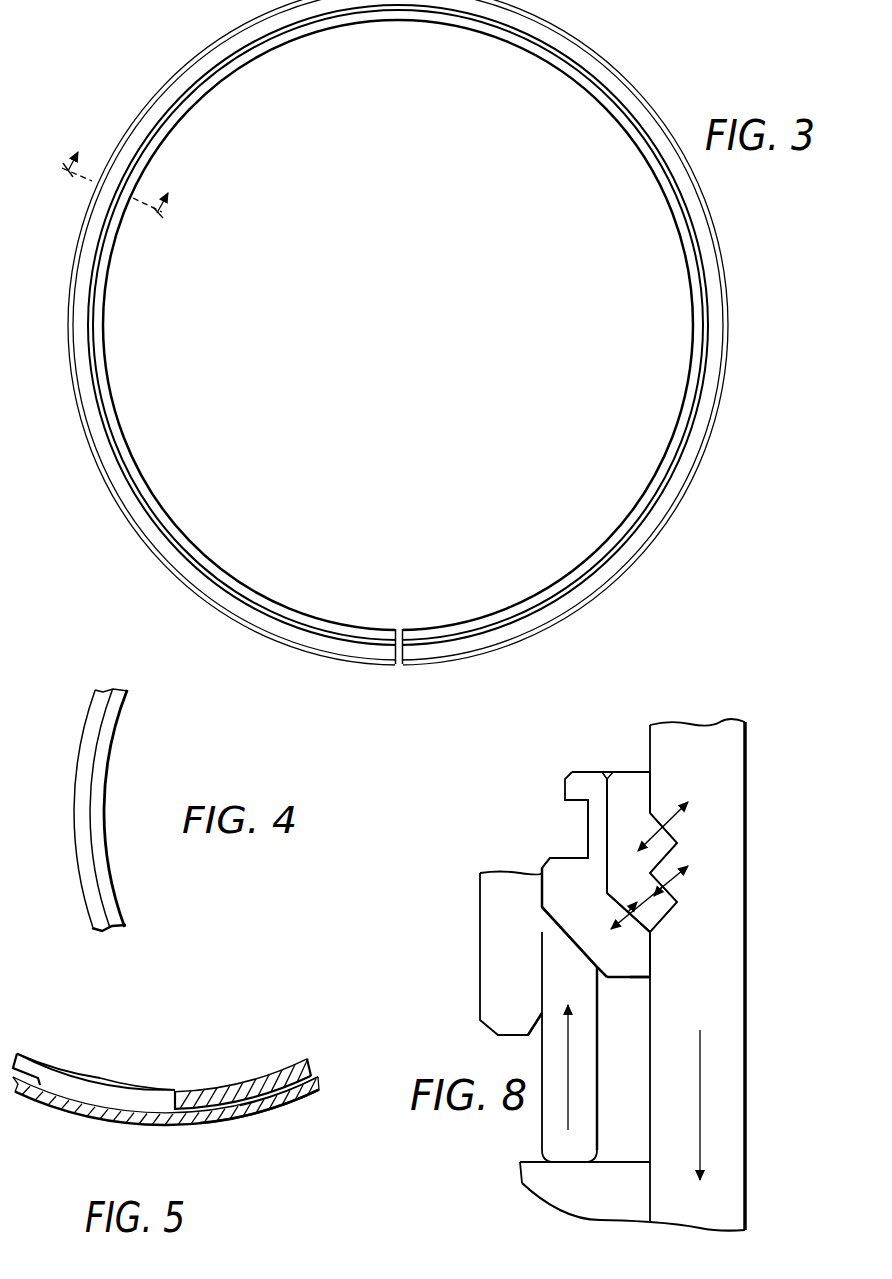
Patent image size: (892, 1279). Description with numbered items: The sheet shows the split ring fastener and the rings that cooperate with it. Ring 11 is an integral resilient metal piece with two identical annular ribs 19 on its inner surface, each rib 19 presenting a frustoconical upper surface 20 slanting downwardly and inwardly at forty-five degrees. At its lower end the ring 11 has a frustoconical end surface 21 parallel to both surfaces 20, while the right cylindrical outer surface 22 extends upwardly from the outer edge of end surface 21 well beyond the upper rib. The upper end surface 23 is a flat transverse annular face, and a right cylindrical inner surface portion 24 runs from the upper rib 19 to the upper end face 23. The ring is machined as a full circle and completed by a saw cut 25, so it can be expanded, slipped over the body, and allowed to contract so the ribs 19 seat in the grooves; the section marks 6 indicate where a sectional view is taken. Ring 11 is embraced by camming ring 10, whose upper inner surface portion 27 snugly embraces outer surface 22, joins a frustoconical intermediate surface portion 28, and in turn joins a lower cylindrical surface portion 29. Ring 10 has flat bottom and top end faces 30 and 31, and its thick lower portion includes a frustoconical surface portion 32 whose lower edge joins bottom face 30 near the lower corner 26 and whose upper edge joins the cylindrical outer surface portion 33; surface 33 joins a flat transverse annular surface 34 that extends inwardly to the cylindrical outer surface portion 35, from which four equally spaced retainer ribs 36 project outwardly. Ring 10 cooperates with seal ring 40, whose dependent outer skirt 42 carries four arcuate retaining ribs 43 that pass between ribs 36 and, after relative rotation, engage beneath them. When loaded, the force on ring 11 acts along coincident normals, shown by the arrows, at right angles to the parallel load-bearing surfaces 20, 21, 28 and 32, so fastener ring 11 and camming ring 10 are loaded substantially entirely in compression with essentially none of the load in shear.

In FIG. 3, the section line 6- 6 is at (121, 172).
In FIG. 5, the camming ring 10 is at (219, 1081).
In FIG. 8, the camming ring 10 is at (561, 855).
In FIG. 3, the ring 11 is at (398, 358).
In FIG. 4, the ring 11 is at (102, 810).
In FIG. 8, the ring 11 is at (647, 859).
In FIG. 3, the annular ribs 19 is at (142, 471).
In FIG. 4, the annular ribs 19 is at (115, 748).
In FIG. 8, the annular ribs 19 is at (673, 849).
In FIG. 3, the frustoconical upper surface 20 is at (165, 517).
In FIG. 8, the frustoconical upper surface 20 is at (671, 833).
In FIG. 4, the frustoconical end surface 21 is at (80, 788).
In FIG. 8, the frustoconical end surface 21 is at (638, 936).
In FIG. 3, the outer surface 22 is at (190, 588).
In FIG. 4, the outer surface 22 is at (78, 852).
In FIG. 8, the outer surface 22 is at (607, 873).
In FIG. 3, the upper end surface 23 is at (150, 533).
In FIG. 8, the upper end surface 23 is at (633, 772).
In FIG. 3, the inner surface portion 24 is at (198, 570).
In FIG. 8, the inner surface portion 24 is at (650, 790).
In FIG. 3, the saw cut 25 is at (399, 667).
In FIG. 8, the bottom corner 26 is at (634, 968).
In FIG. 5, the upper right cylindrical inner surface portion 27 is at (53, 1070).
In FIG. 8, the upper right cylindrical inner surface portion 27 is at (607, 832).
In FIG. 8, the frustoconical intermediate surface portion 28 is at (625, 888).
In FIG. 8, the lower right cylindrical surface portion 29 is at (652, 965).
In FIG. 8, the bottom end face 30 is at (623, 978).
In FIG. 5, the top end face 31 is at (72, 1090).
In FIG. 8, the top end face 31 is at (590, 772).
In FIG. 8, the frustoconical surface portion 32 is at (588, 958).
In FIG. 8, the right cylindrical outer surface portion 33 is at (542, 900).
In FIG. 8, the flat transverse annular surface 34 is at (550, 858).
In FIG. 8, the right cylindrical outer surface portion 35 is at (587, 817).
In FIG. 5, the retainer ribs 36 is at (160, 1108).
In FIG. 5, the seal ring 40 is at (237, 1125).
In FIG. 5, the outer skirt 42 is at (107, 1121).
In FIG. 5, the retaining ribs 43 is at (263, 1100).